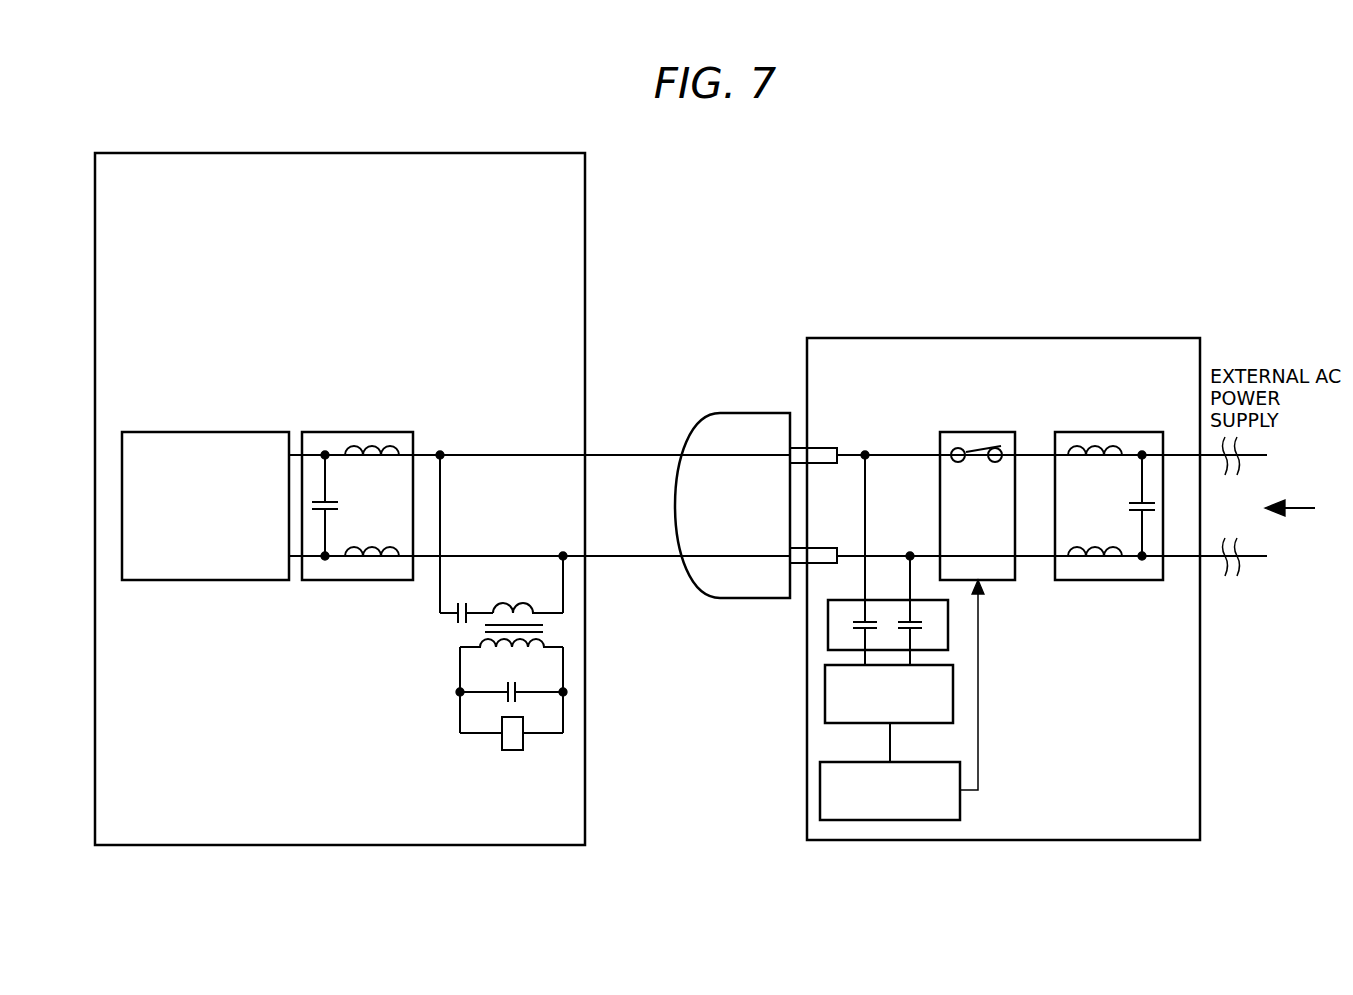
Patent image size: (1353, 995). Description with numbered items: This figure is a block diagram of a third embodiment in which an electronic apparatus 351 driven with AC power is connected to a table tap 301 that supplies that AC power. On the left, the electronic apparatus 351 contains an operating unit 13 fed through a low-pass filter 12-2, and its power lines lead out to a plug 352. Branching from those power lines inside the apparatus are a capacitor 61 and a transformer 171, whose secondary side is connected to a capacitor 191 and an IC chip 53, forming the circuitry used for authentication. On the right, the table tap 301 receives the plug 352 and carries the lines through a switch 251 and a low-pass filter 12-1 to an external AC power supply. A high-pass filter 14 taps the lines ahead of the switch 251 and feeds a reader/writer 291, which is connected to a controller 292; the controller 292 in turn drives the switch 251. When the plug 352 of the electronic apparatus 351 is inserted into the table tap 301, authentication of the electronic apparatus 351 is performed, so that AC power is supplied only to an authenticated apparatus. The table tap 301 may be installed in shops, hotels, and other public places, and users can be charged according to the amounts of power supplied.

The electronic apparatus 351 is at (207, 153).
The operating unit 13 is at (207, 580).
The low-pass filter 12-2 is at (330, 432).
The capacitor 61 is at (458, 615).
The transformer 171 is at (483, 635).
The capacitor 191 is at (503, 698).
The IC chip 53 is at (513, 750).
The plug 352 is at (750, 413).
The table tap 301 is at (1003, 338).
The high-pass filter 14 is at (828, 625).
The reader/writer 291 is at (825, 697).
The controller 292 is at (820, 792).
The switch 251 is at (980, 432).
The low-pass filter 12-1 is at (1068, 580).